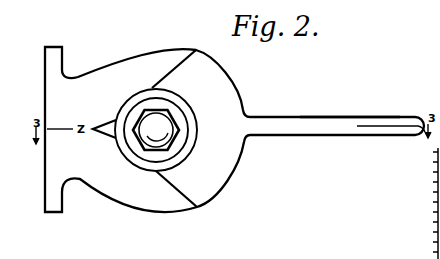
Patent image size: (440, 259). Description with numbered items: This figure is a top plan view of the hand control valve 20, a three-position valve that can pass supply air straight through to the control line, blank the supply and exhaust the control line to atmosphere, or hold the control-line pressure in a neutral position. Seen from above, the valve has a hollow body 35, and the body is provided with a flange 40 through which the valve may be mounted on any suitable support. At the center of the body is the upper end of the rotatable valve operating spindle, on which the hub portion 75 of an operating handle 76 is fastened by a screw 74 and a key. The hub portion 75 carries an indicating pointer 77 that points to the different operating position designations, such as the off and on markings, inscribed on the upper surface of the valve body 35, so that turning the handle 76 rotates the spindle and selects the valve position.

The hand control valve 20 is at (246, 108).
The hollow body 35 is at (150, 58).
The flange 40 is at (55, 54).
The screw 74 is at (172, 142).
The hub portion 75 is at (173, 104).
The operating handle 76 is at (321, 124).
The indicating pointer 77 is at (109, 137).